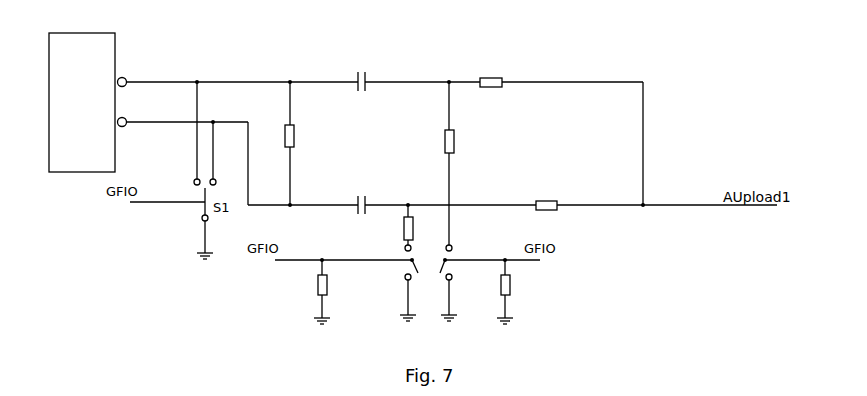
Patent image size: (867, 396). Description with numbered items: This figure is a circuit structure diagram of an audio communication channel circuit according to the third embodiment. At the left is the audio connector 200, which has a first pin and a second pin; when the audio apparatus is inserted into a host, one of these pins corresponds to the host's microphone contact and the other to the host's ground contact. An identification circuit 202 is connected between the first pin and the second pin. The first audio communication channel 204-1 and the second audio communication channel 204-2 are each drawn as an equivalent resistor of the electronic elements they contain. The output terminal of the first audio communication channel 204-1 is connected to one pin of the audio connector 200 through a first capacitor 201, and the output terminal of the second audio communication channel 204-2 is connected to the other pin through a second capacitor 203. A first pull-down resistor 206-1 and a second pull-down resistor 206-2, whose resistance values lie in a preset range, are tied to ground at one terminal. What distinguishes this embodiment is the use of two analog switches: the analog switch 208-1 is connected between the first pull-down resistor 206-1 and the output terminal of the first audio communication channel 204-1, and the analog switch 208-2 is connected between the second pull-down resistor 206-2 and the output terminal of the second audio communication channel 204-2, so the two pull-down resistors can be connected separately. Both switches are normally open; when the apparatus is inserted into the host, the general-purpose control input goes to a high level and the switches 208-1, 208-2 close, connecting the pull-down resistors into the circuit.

The audio connector 200 is at (110, 94).
The first capacitor 201 is at (391, 59).
The identification circuit 202 is at (319, 143).
The second capacitor 203 is at (391, 183).
The first audio communication channel 204-1 is at (525, 60).
The second audio communication channel 204-2 is at (578, 182).
The first pull-down resistor 206-1 is at (488, 166).
The second pull-down resistor 206-2 is at (371, 228).
The analog switch 208-1 is at (484, 270).
The analog switch 208-2 is at (376, 290).